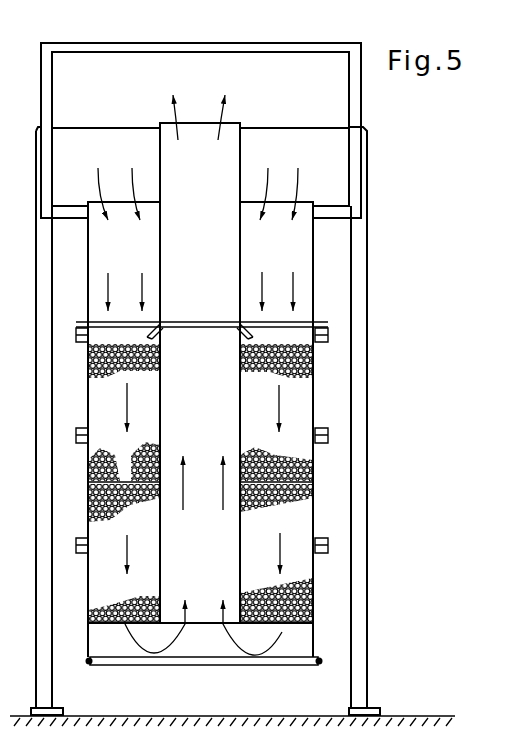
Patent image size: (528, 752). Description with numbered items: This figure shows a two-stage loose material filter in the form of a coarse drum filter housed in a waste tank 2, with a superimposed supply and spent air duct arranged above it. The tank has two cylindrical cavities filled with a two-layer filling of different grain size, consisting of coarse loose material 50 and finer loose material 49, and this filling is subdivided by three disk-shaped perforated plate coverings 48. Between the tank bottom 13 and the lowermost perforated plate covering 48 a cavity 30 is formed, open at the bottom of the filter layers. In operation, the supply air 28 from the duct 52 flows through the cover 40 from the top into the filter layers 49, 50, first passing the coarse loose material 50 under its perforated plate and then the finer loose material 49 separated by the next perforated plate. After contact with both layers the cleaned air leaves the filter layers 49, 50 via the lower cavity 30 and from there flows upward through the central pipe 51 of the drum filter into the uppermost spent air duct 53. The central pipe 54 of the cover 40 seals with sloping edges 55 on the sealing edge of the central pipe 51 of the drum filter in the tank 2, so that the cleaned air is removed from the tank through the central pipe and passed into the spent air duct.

The waste tank 2 is at (330, 432).
The tank bottom 13 is at (218, 662).
The supply air 28 is at (300, 241).
The cavity 30 is at (310, 638).
The cover 40 is at (315, 283).
The perforated plate coverings 48 is at (102, 343).
The finer loose material 49 is at (127, 602).
The coarse loose material 50 is at (97, 376).
The central pipe 51 is at (245, 525).
The duct 52 is at (337, 168).
The spent air duct 53 is at (337, 97).
The central pipe of cover 54 is at (158, 145).
The sloping edges 55 is at (150, 333).